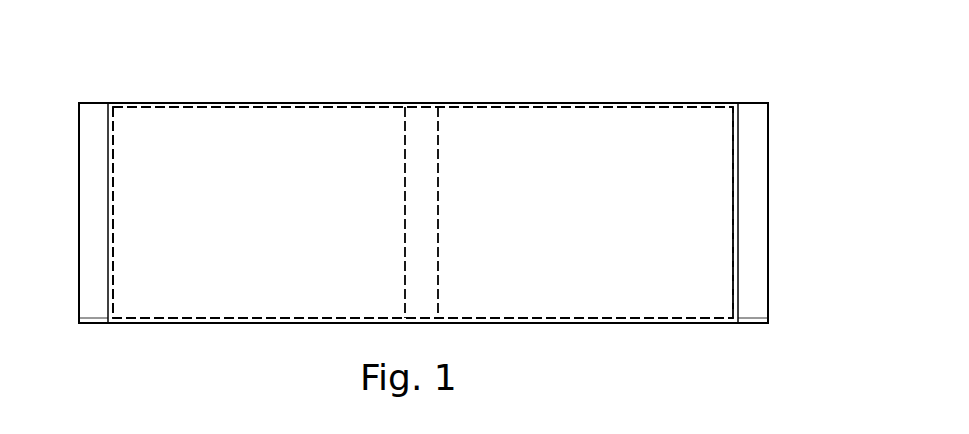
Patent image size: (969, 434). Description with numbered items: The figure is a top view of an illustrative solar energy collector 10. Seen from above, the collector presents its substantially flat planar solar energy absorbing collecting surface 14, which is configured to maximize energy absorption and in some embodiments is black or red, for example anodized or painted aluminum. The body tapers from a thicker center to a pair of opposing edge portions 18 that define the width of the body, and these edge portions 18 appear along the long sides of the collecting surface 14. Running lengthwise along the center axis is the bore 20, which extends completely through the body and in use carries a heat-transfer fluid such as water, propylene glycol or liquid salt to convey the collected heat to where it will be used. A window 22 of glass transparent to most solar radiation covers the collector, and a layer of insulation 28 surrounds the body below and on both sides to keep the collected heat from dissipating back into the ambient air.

The solar energy collector 10 is at (585, 83).
The planar solar energy absorbing collecting surface 14 is at (522, 212).
The edge portions 18 is at (117, 215).
The bore 20 is at (434, 232).
The window 22 is at (107, 140).
The layer of insulation 28 is at (78, 314).